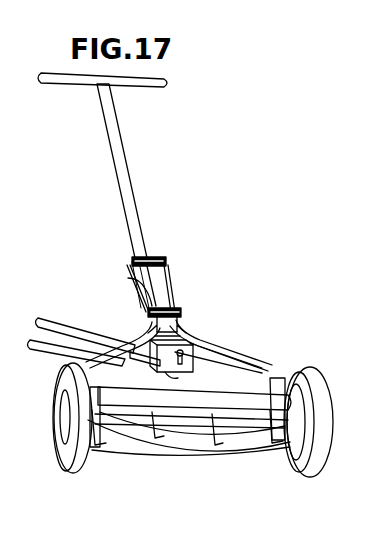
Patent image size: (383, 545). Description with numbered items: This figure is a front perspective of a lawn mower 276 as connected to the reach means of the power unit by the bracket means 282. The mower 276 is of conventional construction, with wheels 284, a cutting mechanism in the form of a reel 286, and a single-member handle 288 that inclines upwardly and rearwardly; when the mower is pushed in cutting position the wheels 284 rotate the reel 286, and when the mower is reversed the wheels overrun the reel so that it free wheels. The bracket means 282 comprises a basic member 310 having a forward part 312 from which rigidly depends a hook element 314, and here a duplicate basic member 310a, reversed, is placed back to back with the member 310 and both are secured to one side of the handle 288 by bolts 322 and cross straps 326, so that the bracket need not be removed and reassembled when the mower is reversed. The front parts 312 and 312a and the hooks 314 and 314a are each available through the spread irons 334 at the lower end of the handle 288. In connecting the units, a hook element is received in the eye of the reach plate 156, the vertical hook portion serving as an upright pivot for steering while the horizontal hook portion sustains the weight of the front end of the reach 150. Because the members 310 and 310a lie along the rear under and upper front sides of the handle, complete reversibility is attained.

The handle 288 is at (126, 163).
The bolts 322 is at (143, 258).
The cross straps 326 is at (128, 278).
The duplicate basic member 310a is at (166, 290).
The bracket means 282 is at (196, 288).
The basic member 310 is at (136, 300).
The reach 150 is at (62, 314).
The front part 312a is at (193, 334).
The reach plate 156 is at (138, 358).
The spread irons 334 is at (73, 362).
The hook 314a is at (246, 350).
The hook element 314 is at (179, 378).
The forward part 312 is at (112, 368).
The wheels 284 is at (72, 468).
The reel 286 is at (184, 441).
The lawn mower 276 is at (131, 464).